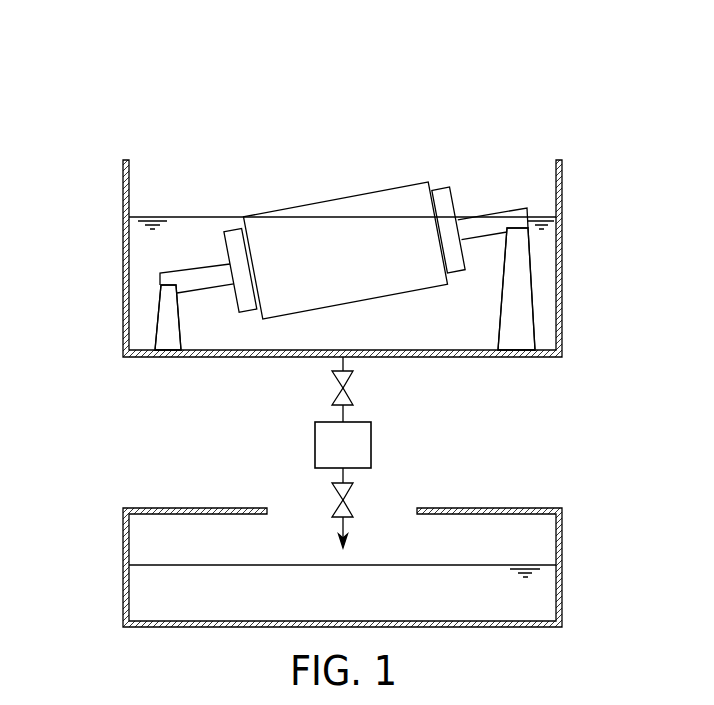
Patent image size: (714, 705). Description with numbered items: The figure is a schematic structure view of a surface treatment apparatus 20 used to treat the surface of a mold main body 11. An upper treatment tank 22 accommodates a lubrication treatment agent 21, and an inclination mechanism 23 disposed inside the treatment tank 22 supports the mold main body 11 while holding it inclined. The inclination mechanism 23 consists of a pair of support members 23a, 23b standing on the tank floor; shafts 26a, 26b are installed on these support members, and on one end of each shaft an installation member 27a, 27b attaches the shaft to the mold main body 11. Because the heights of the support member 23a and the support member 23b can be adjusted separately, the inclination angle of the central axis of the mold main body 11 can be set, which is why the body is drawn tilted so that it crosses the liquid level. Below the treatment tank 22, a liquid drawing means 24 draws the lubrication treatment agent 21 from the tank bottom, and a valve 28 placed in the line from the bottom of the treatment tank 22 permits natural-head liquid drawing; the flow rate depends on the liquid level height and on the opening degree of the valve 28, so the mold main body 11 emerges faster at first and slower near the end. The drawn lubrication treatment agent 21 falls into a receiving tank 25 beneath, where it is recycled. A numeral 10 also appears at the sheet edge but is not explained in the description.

The hollow fiber membrane module 10 is at (228, 700).
The mold main body 11 is at (340, 184).
The surface treatment apparatus 20 is at (160, 105).
The lubrication treatment agent 21 is at (548, 258).
The treatment tank 22 is at (109, 247).
The inclination mechanism 23 is at (137, 314).
The support member 23a is at (157, 333).
The support member 23b is at (533, 321).
The liquid drawing means 24 is at (400, 439).
The receiving tank 25 is at (109, 541).
The shaft 26a is at (200, 268).
The shaft 26b is at (503, 212).
The installation member 27a is at (233, 230).
The installation member 27b is at (440, 188).
The valve 28 is at (350, 381).